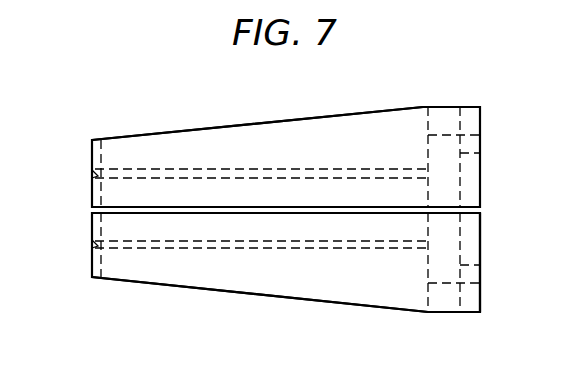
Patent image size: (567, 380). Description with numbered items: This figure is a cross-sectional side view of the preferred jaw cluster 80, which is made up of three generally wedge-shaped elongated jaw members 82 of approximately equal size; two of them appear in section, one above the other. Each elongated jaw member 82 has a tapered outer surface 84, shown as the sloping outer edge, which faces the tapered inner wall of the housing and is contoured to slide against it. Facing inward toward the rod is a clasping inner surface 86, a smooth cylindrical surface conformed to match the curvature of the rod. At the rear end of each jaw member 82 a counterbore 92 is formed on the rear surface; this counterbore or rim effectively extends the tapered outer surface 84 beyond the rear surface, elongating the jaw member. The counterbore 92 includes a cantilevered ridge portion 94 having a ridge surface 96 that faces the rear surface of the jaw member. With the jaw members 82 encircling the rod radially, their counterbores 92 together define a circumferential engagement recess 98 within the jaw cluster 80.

The jaw cluster 80 is at (188, 125).
The elongated jaw member 82 is at (92, 173).
The tapered outer surface 84 is at (304, 114).
The clasping inner surface 86 is at (237, 195).
The counterbore 92 is at (443, 298).
The cantilevered ridge portion 94 is at (483, 270).
The ridge surface 96 is at (460, 145).
The circumferential engagement recess 98 is at (435, 165).